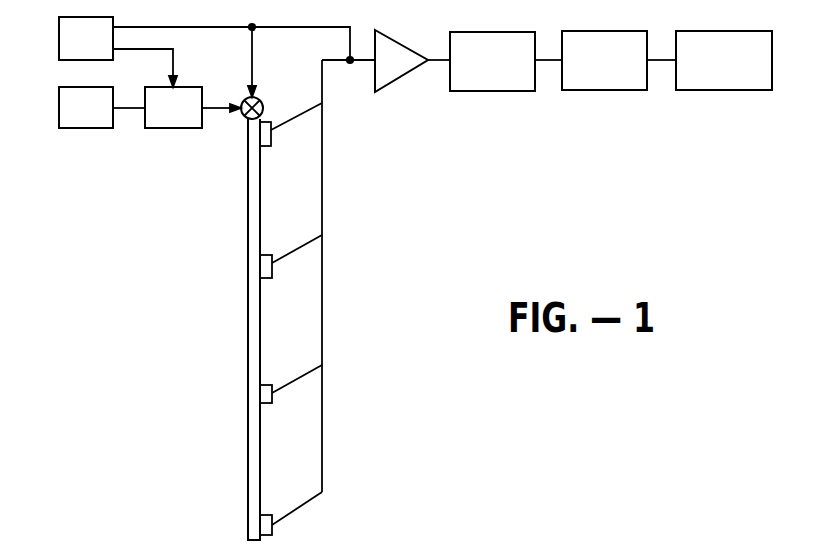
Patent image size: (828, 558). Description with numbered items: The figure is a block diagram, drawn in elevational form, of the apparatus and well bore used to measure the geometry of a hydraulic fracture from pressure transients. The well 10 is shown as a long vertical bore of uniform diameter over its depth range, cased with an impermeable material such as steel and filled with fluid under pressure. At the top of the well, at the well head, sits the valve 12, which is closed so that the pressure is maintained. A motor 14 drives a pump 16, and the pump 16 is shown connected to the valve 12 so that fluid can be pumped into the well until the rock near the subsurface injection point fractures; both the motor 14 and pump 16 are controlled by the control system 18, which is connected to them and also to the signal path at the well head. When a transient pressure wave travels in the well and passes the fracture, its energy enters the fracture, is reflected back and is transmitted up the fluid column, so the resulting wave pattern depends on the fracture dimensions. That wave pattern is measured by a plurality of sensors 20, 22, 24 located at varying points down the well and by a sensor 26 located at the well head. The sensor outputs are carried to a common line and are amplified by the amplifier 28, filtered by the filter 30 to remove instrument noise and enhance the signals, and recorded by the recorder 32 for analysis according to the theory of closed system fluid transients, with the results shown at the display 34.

The well 10 is at (255, 358).
The valve 12 is at (241, 118).
The motor 14 is at (83, 128).
The pump 16 is at (178, 128).
The control system 18 is at (106, 50).
The sensor 20 is at (268, 272).
The sensor 22 is at (270, 400).
The sensor 24 is at (275, 530).
The sensor 26 is at (270, 136).
The amplifier 28 is at (390, 77).
The filter 30 is at (502, 80).
The recorder 32 is at (595, 80).
The display 34 is at (710, 80).